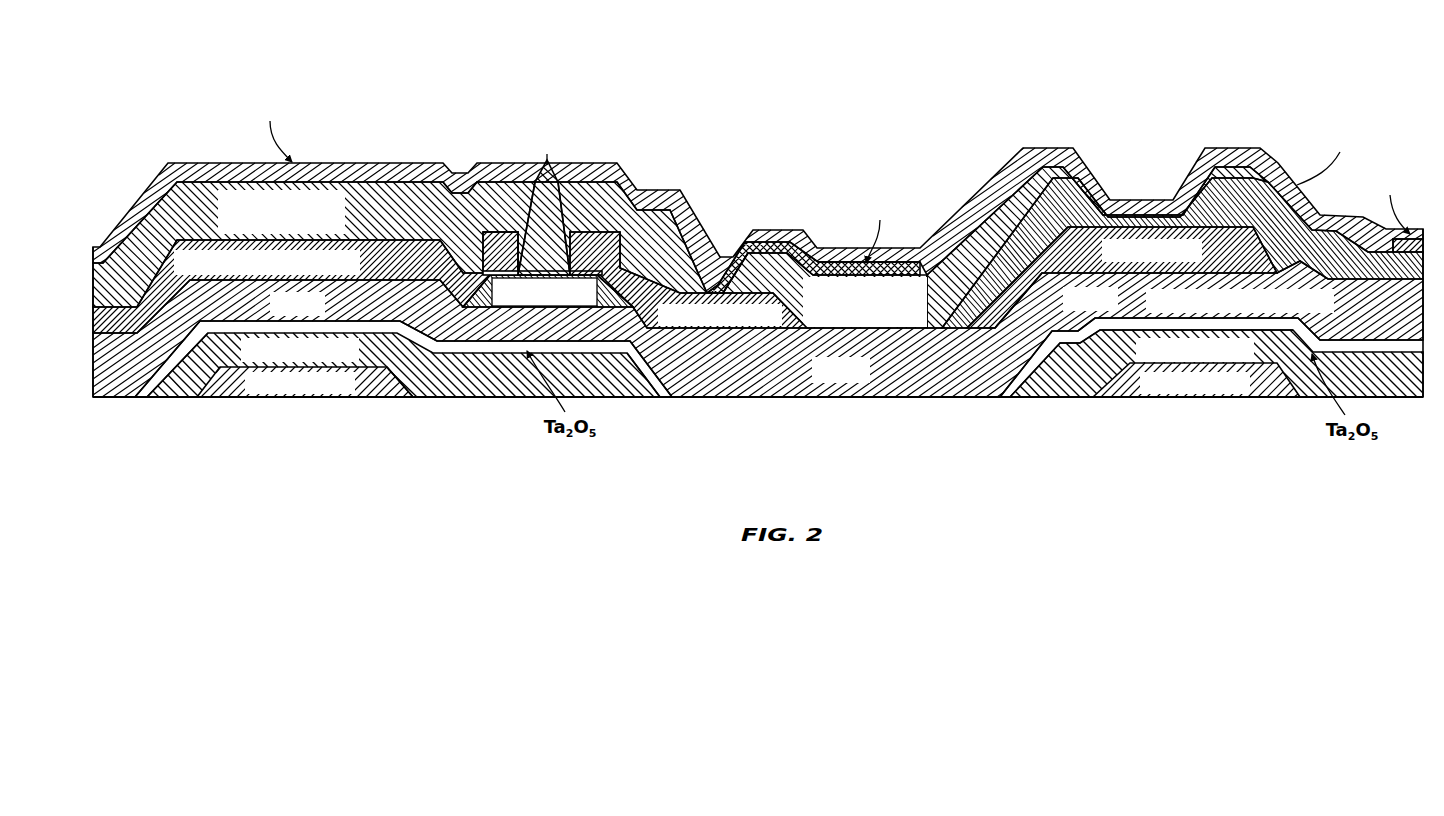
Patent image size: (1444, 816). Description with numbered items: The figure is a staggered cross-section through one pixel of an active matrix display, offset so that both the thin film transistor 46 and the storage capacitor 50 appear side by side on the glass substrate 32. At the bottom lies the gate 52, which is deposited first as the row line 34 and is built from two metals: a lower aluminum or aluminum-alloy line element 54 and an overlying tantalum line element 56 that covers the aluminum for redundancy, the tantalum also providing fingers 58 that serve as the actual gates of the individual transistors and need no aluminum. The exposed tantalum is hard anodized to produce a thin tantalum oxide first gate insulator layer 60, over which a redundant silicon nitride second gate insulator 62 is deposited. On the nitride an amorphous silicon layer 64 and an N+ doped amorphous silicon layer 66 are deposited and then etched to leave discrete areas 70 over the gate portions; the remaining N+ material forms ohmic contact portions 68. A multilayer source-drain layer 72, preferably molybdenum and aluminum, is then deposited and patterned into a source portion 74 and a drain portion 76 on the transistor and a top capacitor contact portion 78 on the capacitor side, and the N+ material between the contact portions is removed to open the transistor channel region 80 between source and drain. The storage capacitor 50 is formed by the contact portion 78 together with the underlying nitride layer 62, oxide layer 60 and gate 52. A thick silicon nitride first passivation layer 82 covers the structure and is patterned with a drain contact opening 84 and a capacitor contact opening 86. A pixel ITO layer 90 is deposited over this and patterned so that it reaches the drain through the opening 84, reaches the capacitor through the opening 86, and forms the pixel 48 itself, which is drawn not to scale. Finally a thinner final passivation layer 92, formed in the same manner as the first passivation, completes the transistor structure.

The glass substrate 32 is at (882, 479).
The row line 34 is at (293, 398).
The TFT 46 is at (595, 114).
The pixel 48 is at (833, 257).
The storage capacitor 50 is at (1142, 141).
The gate 52 is at (412, 401).
The line element 54 is at (225, 398).
The line element 56 is at (458, 398).
The fingers 58 is at (630, 398).
The first gate insulator layer 60 is at (478, 352).
The second gate insulator 62 is at (101, 377).
The amorphous silicon layer 64 is at (520, 306).
The N+ doped amorphous silicon layer 66 is at (487, 300).
The ohmic contact portions 68 is at (503, 268).
The discrete areas 70 is at (598, 301).
The source-drain layer 72 is at (1052, 259).
The source portion 74 is at (176, 272).
The drain portion 76 is at (645, 319).
The top capacitor contact portion 78 is at (1035, 285).
The transistor channel region 80 is at (545, 258).
The first passivation layer 82 is at (394, 217).
The drain contact opening 84 is at (759, 273).
The capacitor contact opening 86 is at (1150, 226).
The pixel ITO layer 90 is at (910, 252).
The final passivation layer 92 is at (373, 163).